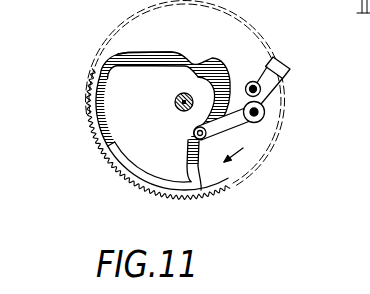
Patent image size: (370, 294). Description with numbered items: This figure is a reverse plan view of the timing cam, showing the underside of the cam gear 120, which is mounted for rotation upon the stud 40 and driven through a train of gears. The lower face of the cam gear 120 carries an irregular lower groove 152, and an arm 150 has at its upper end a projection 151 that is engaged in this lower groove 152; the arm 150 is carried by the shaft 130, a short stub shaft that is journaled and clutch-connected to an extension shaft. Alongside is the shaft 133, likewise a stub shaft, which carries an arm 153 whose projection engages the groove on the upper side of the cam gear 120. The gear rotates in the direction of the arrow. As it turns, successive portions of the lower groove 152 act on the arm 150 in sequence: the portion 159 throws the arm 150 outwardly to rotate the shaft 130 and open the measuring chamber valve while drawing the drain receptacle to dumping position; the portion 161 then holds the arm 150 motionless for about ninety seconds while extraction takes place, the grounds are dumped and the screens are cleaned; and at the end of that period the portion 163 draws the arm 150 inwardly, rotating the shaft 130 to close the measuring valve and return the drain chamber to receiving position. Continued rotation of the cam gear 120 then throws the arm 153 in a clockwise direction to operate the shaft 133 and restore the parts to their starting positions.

The cam gear 120 is at (98, 149).
The portion of the lower groove 161 is at (112, 163).
The lower groove 152 is at (102, 65).
The portion of the lower groove 159 is at (148, 60).
The portion of the lower groove 163 is at (200, 168).
The stud 40 is at (187, 99).
The arm 150 is at (239, 125).
The shaft 130 is at (265, 113).
The projection 151 is at (194, 133).
The arm 153 is at (292, 71).
The shaft 133 is at (254, 83).